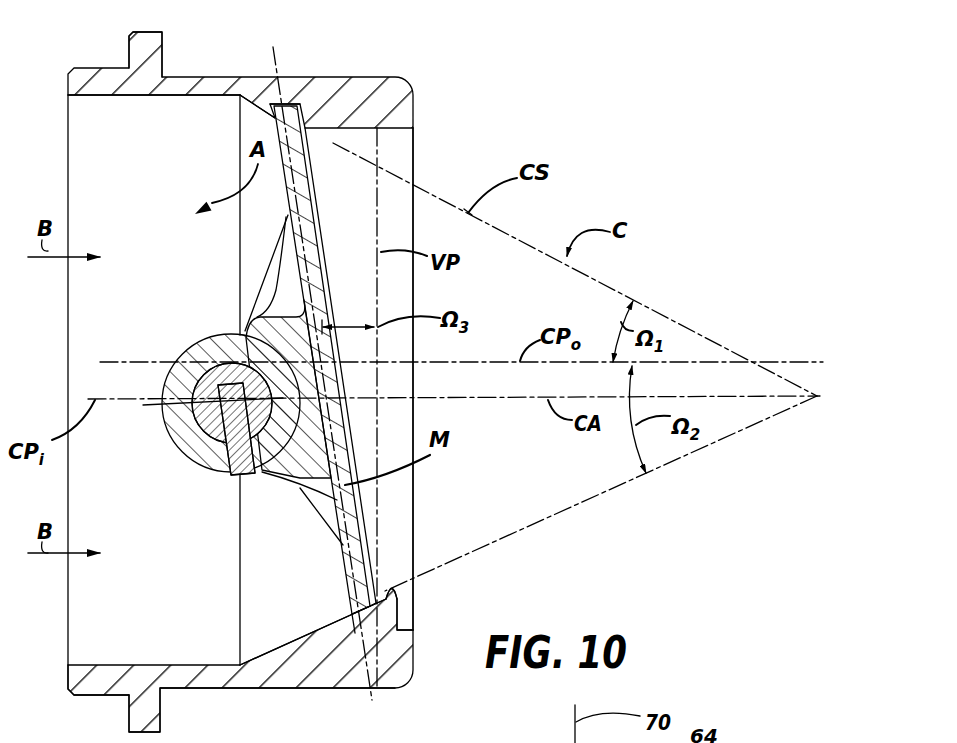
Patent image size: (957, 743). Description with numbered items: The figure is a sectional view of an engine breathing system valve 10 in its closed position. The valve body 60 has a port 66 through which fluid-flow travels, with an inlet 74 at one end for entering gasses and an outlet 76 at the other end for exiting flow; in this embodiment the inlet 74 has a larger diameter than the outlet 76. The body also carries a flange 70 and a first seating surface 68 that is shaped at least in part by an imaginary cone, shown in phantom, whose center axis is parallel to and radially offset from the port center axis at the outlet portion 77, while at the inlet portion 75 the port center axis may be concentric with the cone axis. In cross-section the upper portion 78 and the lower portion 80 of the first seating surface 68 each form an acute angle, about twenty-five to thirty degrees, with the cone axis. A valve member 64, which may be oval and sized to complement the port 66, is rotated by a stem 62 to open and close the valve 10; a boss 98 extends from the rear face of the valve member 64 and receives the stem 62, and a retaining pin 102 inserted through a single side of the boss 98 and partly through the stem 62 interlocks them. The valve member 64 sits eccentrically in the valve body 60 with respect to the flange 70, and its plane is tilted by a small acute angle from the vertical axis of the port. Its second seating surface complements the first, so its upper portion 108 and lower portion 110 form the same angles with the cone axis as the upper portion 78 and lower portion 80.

The valve 10 is at (461, 139).
The valve body 60 is at (232, 77).
The stem 62 is at (207, 420).
The valve member 64 is at (305, 240).
The port 66 is at (126, 96).
The first seating surface 68 is at (300, 128).
The flange 70 is at (148, 47).
The inlet 74 is at (65, 662).
The inlet portion 75 is at (158, 664).
The outlet 76 is at (397, 596).
The outlet portion 77 is at (397, 622).
The upper portion 78 is at (276, 118).
The lower portion 80 is at (385, 566).
The boss 98 is at (200, 447).
The retaining pin 102 is at (237, 476).
The upper portion 108 is at (281, 106).
The lower portion 110 is at (372, 603).